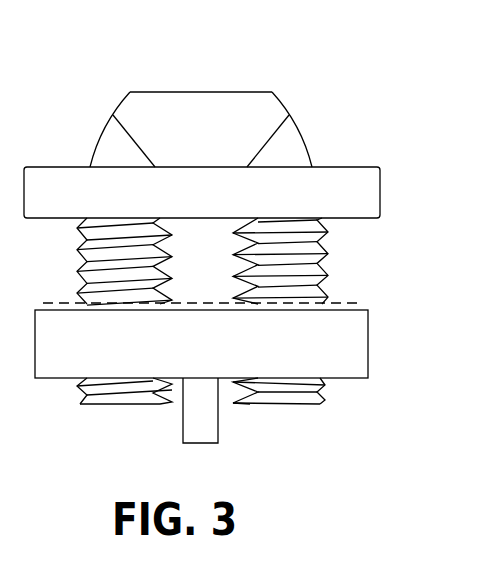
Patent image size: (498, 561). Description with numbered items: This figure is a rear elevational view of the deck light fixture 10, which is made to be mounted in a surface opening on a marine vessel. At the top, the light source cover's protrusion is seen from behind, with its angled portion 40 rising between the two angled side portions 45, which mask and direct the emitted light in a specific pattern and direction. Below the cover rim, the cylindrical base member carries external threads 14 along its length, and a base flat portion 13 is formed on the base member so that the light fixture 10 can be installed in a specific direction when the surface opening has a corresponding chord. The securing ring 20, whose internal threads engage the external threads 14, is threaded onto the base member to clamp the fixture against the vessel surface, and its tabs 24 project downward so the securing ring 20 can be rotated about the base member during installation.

The light fixture 10 is at (332, 72).
The base flat portion 13 is at (217, 277).
The external threads 14 is at (320, 259).
The securing ring 20 is at (355, 351).
The tabs 24 is at (216, 432).
The angled portion 40 is at (212, 143).
The angled side portions 45 is at (116, 142).